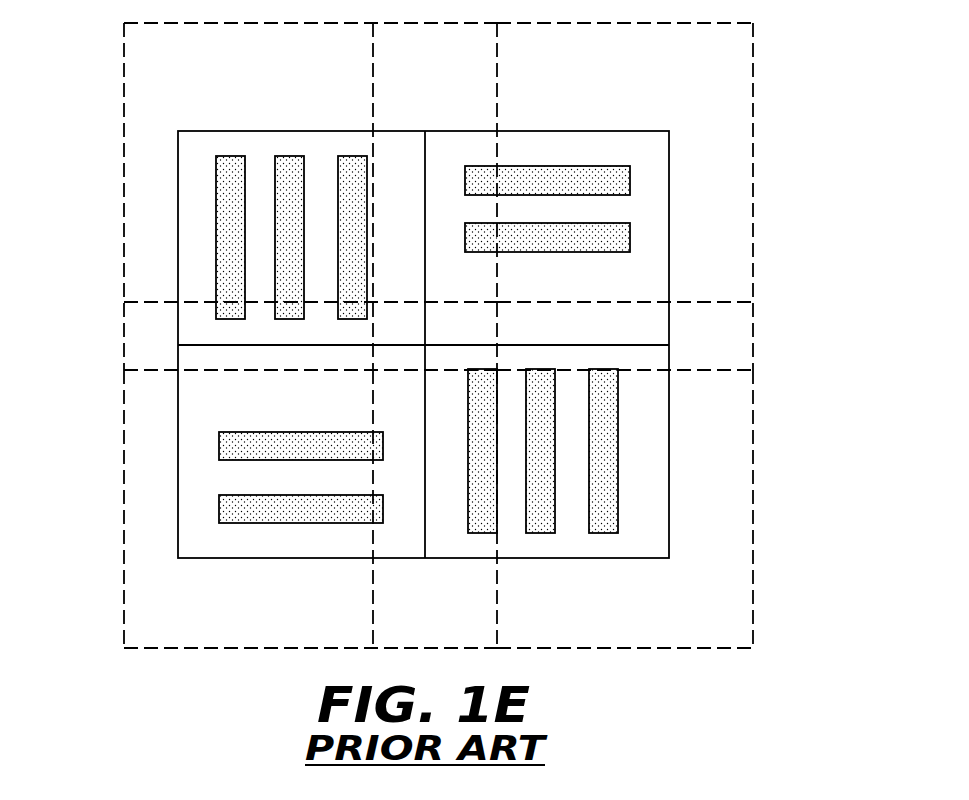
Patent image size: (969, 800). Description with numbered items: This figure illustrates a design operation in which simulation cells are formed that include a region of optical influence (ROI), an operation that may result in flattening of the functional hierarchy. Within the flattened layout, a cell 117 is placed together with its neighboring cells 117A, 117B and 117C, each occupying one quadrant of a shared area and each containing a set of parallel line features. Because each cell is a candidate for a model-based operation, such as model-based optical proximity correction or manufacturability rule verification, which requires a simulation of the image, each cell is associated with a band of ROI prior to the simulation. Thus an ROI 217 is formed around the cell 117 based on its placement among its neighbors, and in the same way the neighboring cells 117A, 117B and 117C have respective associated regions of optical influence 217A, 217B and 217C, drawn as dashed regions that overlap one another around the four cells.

The cell 117 is at (183, 448).
The neighboring cell 117A is at (183, 233).
The neighboring cell 117B is at (667, 232).
The neighboring cell 117C is at (666, 448).
The region of optical influence (ROI) 217 is at (233, 617).
The region of optical influence (ROI) 217A is at (242, 91).
The region of optical influence (ROI) 217B is at (684, 90).
The region of optical influence (ROI) 217C is at (685, 617).